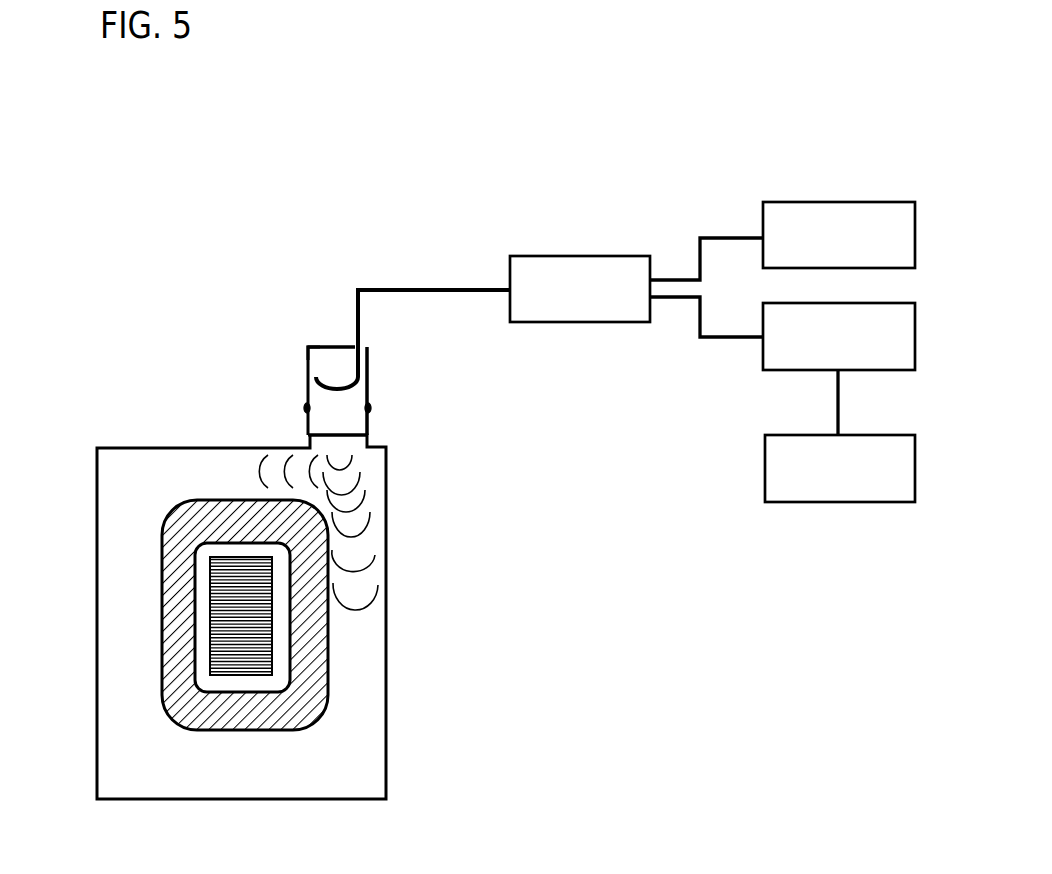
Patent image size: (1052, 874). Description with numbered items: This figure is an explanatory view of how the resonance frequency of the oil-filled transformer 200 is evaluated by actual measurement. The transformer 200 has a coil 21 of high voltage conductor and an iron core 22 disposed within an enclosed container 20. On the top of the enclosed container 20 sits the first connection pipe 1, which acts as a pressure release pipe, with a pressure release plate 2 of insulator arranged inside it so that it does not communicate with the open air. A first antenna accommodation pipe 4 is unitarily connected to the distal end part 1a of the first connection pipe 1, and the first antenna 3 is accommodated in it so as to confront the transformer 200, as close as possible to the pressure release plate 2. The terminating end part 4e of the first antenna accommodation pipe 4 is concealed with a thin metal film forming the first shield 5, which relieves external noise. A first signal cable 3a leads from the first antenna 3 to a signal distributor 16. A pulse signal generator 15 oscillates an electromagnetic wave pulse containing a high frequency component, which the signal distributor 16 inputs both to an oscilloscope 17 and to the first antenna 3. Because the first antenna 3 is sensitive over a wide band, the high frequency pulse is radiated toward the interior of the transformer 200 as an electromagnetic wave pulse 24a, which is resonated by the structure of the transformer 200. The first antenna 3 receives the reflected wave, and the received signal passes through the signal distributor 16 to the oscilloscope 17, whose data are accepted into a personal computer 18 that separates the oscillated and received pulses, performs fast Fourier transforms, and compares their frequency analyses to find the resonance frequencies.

The first connection pipe 1 is at (370, 437).
The distal end part 1a is at (372, 407).
The pressure release plate 2 is at (333, 433).
The first antenna 3 is at (316, 381).
The first signal cable 3a is at (360, 308).
The first antenna accommodation pipe 4 is at (368, 370).
The terminating end part 4e is at (307, 346).
The first shield 5 is at (338, 347).
The pulse signal generator 15 is at (840, 202).
The signal distributor 16 is at (597, 256).
The oscilloscope 17 is at (763, 354).
The personal computer 18 is at (765, 467).
The enclosed container 20 is at (387, 658).
The coil 21 is at (172, 558).
The iron core 22 is at (233, 637).
The electromagnetic wave pulse 24a is at (368, 565).
The oil-filled transformer 200 is at (155, 378).